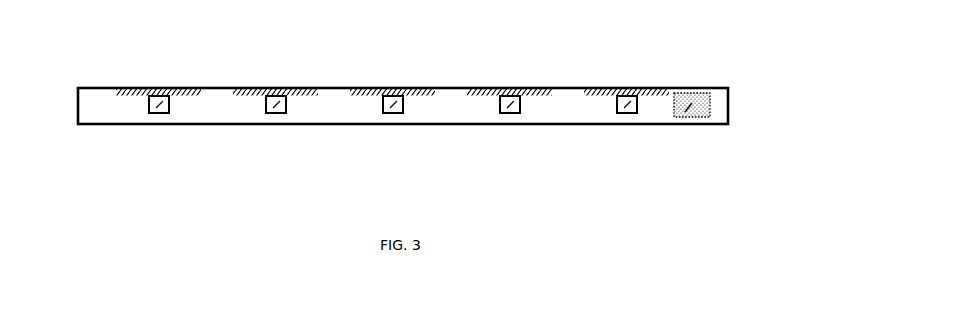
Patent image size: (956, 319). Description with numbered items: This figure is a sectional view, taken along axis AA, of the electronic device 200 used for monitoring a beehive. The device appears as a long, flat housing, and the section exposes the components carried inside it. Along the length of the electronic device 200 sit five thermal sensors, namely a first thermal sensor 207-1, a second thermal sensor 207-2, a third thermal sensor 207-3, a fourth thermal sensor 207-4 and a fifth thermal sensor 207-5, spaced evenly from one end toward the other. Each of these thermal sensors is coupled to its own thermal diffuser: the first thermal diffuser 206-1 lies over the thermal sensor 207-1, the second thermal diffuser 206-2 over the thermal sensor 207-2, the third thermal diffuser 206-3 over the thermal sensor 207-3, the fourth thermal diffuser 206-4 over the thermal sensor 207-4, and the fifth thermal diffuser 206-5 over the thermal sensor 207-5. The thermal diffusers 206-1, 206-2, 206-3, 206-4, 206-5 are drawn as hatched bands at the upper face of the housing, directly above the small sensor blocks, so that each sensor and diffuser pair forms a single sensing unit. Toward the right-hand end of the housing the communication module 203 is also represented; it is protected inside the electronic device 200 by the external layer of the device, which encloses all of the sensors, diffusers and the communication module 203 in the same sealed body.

The electronic device 200 is at (722, 98).
The communication module 203 is at (693, 122).
The thermal diffuser 206-1 is at (167, 88).
The thermal diffuser 206-2 is at (275, 88).
The thermal diffuser 206-3 is at (393, 88).
The thermal diffuser 206-4 is at (509, 88).
The thermal diffuser 206-5 is at (623, 88).
The thermal sensor 207-1 is at (150, 124).
The thermal sensor 207-2 is at (267, 124).
The thermal sensor 207-3 is at (384, 124).
The thermal sensor 207-4 is at (501, 124).
The thermal sensor 207-5 is at (618, 124).